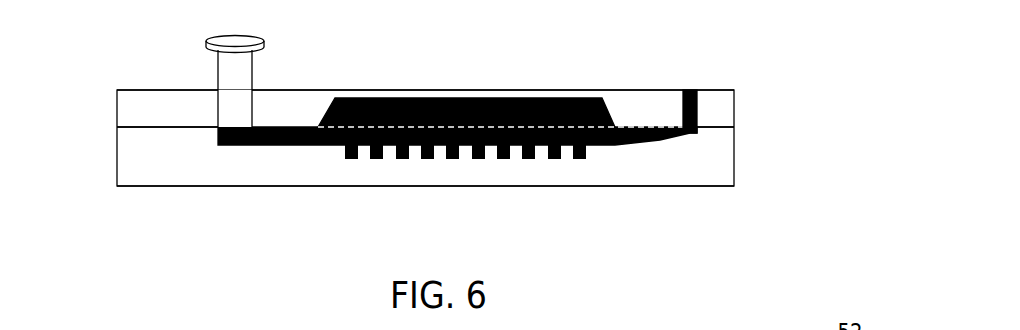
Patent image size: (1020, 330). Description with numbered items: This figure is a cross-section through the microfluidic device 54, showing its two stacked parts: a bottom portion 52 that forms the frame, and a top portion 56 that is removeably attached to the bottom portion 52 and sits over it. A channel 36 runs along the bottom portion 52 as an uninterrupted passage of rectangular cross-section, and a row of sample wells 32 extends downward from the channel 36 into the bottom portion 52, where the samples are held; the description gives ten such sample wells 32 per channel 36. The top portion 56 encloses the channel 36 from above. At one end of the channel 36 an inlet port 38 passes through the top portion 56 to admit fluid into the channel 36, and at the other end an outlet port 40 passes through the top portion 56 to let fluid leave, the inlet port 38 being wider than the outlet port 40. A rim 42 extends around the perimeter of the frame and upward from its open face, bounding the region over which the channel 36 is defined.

The sample wells 32 is at (351, 159).
The channel 36 is at (278, 133).
The inlet port 38 is at (237, 131).
The outlet port 40 is at (688, 128).
The rim 42 is at (720, 133).
The bottom portion 52 is at (128, 167).
The microfluidic device 54 is at (770, 63).
The top portion 56 is at (128, 102).